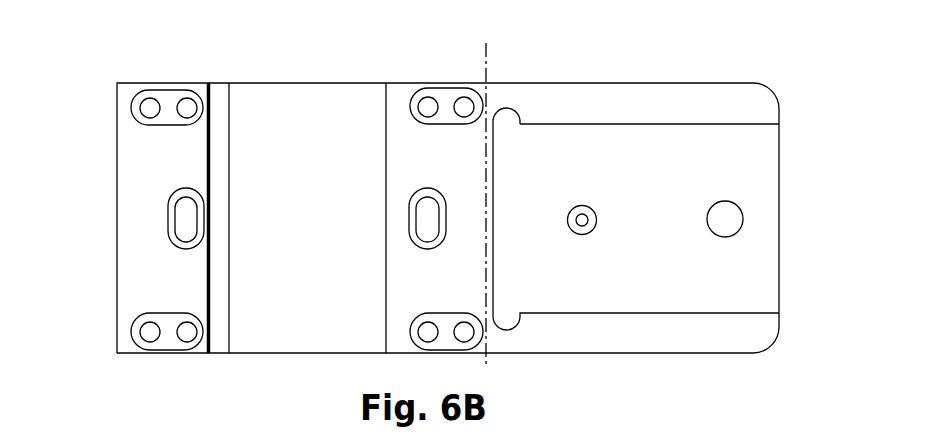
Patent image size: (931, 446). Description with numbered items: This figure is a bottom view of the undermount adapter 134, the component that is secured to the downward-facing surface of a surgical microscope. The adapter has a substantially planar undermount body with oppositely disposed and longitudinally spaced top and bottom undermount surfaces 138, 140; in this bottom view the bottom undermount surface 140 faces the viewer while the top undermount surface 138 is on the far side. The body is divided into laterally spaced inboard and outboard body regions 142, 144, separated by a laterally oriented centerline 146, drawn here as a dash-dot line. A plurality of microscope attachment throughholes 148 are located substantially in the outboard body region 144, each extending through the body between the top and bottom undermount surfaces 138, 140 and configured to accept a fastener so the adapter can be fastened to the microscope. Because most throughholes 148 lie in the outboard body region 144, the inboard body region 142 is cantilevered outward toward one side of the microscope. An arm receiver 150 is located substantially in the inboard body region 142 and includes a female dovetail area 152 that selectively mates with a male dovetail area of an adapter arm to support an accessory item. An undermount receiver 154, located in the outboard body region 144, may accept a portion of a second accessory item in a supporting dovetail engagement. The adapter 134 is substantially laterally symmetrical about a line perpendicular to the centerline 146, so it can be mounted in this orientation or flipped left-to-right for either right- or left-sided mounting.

The undermount adapter 134 is at (104, 214).
The top undermount surface 138 is at (308, 83).
The bottom undermount surface 140 is at (639, 333).
The inboard body region 142 is at (578, 381).
The outboard body region 144 is at (236, 377).
The centerline 146 is at (487, 73).
The microscope attachment throughholes 148 is at (187, 104).
The arm receiver 150 is at (673, 228).
The female dovetail area 152 is at (749, 124).
The undermount receiver 154 is at (302, 236).